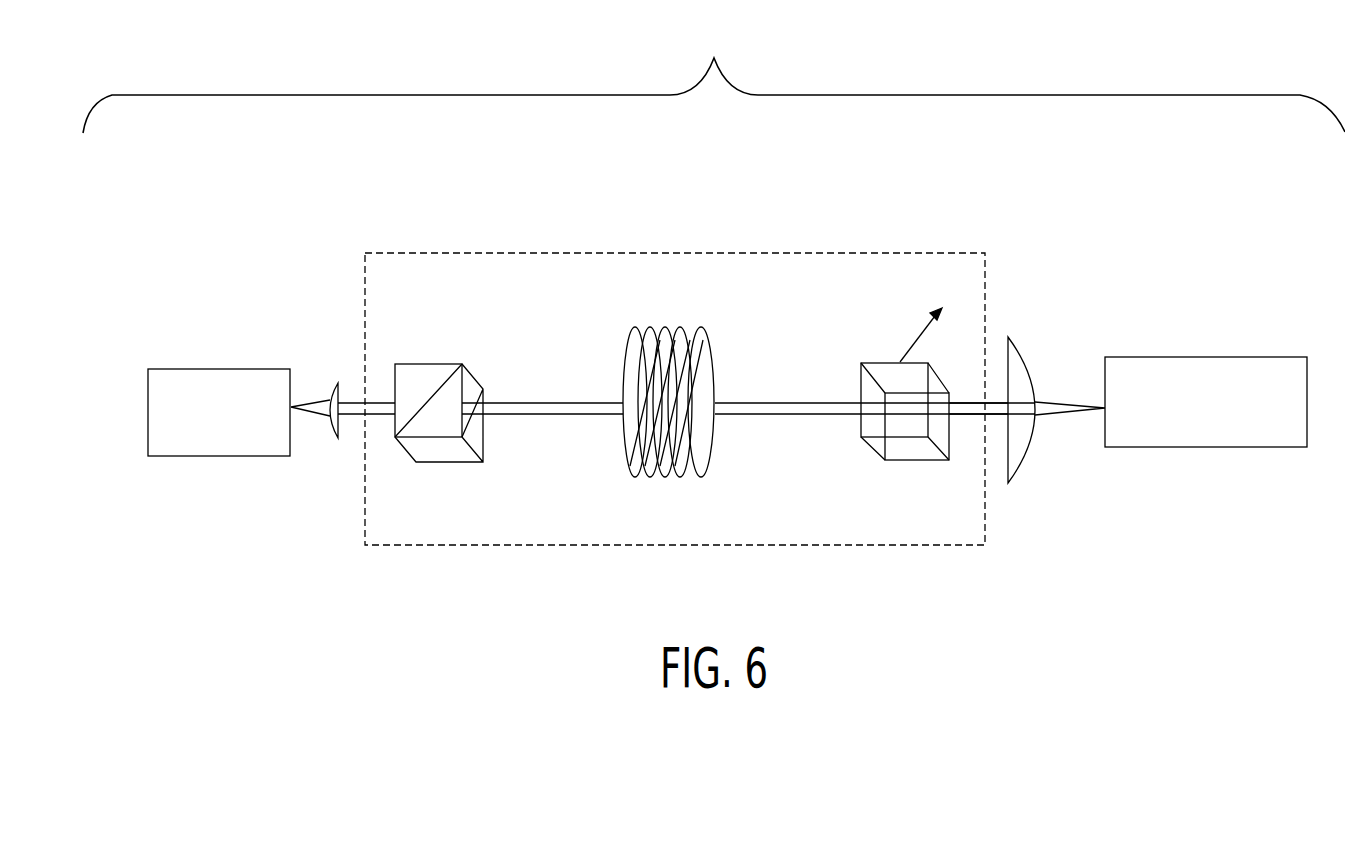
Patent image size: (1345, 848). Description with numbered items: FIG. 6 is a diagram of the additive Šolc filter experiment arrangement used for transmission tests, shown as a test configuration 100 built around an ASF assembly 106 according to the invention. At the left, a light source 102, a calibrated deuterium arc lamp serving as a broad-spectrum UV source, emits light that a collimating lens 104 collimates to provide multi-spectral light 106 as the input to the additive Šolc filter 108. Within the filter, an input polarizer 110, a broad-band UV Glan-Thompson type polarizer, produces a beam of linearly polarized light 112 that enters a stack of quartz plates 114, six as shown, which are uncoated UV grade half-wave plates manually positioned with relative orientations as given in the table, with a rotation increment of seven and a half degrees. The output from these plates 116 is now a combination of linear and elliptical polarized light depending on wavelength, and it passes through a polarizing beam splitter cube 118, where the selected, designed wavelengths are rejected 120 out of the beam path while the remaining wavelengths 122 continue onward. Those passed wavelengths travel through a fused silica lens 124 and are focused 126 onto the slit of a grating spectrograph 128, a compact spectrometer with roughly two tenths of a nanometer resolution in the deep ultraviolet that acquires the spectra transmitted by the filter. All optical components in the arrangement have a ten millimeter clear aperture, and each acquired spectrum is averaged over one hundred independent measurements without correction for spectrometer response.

The test configuration 100 is at (714, 76).
The light source 102 is at (218, 369).
The collimating lens 104 is at (332, 383).
The ASF assembly 106 is at (710, 252).
The additive Šolc filter 108 is at (370, 416).
The input polarizer 110 is at (430, 364).
The beam of linearly polarized light 112 is at (540, 402).
The quartz plates 114 is at (700, 327).
The output from the plates 116 is at (786, 402).
The polarizing beam splitter cube 118 is at (866, 440).
The rejected wavelengths 120 is at (915, 340).
The remaining wavelengths 122 is at (992, 398).
The fused silica lens 124 is at (1012, 483).
The focused light 126 is at (1055, 412).
The grating spectrograph 128 is at (1205, 357).